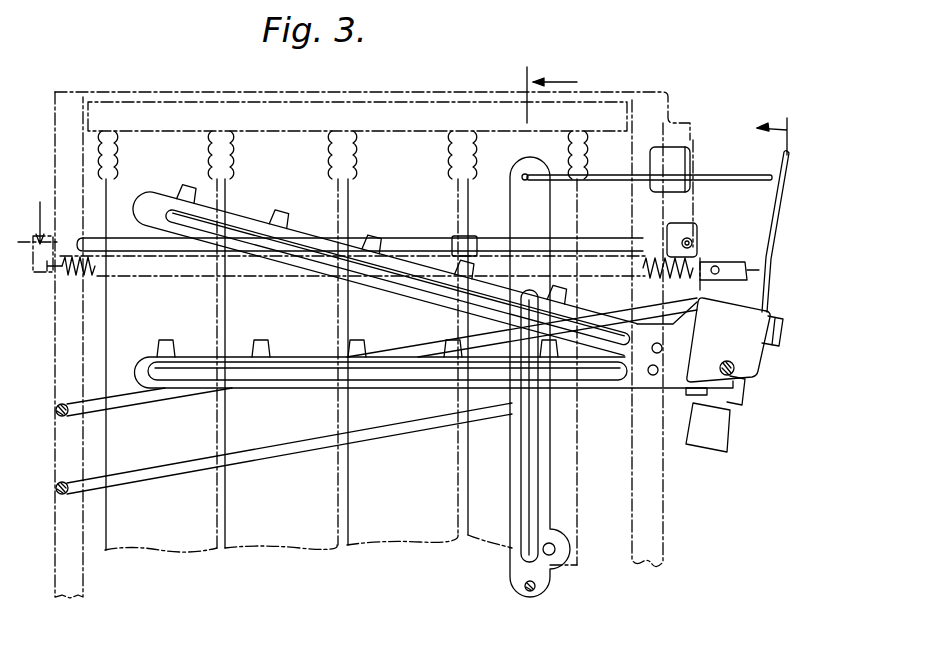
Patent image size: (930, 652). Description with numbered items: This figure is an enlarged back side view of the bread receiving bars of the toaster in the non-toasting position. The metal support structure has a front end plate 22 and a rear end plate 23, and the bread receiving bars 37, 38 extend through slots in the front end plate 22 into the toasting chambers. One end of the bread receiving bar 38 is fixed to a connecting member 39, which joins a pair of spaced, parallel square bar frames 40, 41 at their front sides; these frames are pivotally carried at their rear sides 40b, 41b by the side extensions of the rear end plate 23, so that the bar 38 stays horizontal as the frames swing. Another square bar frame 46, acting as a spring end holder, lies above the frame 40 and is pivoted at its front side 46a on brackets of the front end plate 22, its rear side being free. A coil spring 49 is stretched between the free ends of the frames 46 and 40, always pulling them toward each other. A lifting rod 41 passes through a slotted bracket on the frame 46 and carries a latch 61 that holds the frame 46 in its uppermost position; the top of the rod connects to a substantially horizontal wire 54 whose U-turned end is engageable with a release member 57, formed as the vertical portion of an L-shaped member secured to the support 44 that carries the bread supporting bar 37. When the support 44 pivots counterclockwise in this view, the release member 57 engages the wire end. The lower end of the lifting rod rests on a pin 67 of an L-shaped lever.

The front end plate 22 is at (656, 487).
The rear end plate 23 is at (62, 438).
The bread receiving bar 37 is at (290, 233).
The bread receiving bar 38 is at (288, 355).
The connecting member 39 is at (728, 262).
The bar frame 40 is at (170, 397).
The rear side of bar frame 40b is at (56, 410).
The bar frame 41 is at (192, 468).
The rear side of bar frame 41b is at (56, 488).
The support member 44 is at (745, 352).
The bar frame 46 is at (402, 243).
The front side of bar frame 46a is at (697, 240).
The coil spring 49 is at (174, 265).
The wire 54 is at (608, 180).
The release member 57 is at (785, 160).
The latch 61 is at (551, 290).
The pin 67 is at (530, 593).